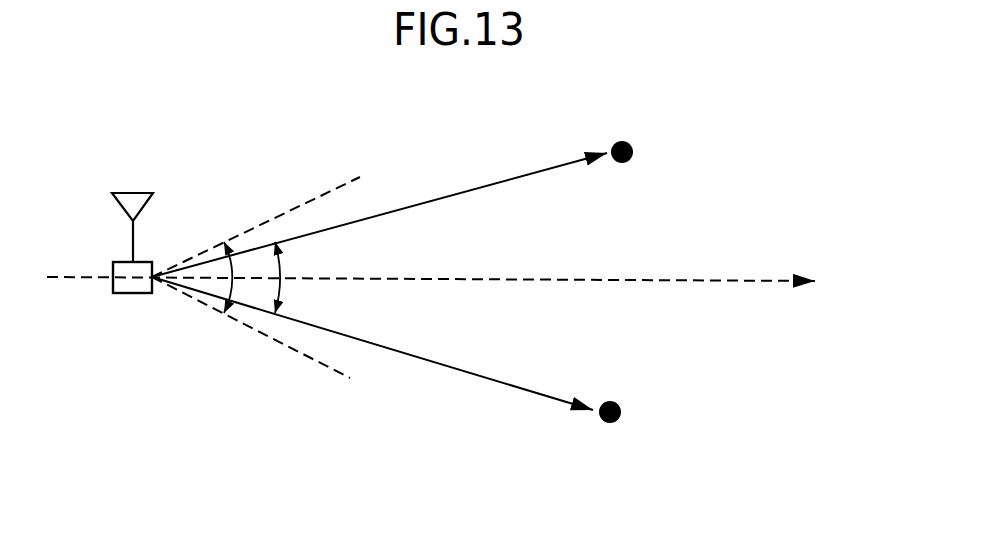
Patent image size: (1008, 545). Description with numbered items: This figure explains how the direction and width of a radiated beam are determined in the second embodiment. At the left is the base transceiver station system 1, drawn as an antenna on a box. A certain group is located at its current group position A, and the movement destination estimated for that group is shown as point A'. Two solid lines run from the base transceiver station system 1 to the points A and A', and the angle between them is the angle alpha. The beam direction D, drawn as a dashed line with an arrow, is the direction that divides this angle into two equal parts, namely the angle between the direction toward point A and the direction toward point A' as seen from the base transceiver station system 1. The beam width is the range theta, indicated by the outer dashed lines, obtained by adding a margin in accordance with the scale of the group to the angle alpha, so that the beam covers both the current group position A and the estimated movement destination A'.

The base transceiver station system 1 is at (127, 275).
The current group position A is at (504, 195).
The estimated movement destination A' is at (480, 379).
The beam direction D is at (476, 300).